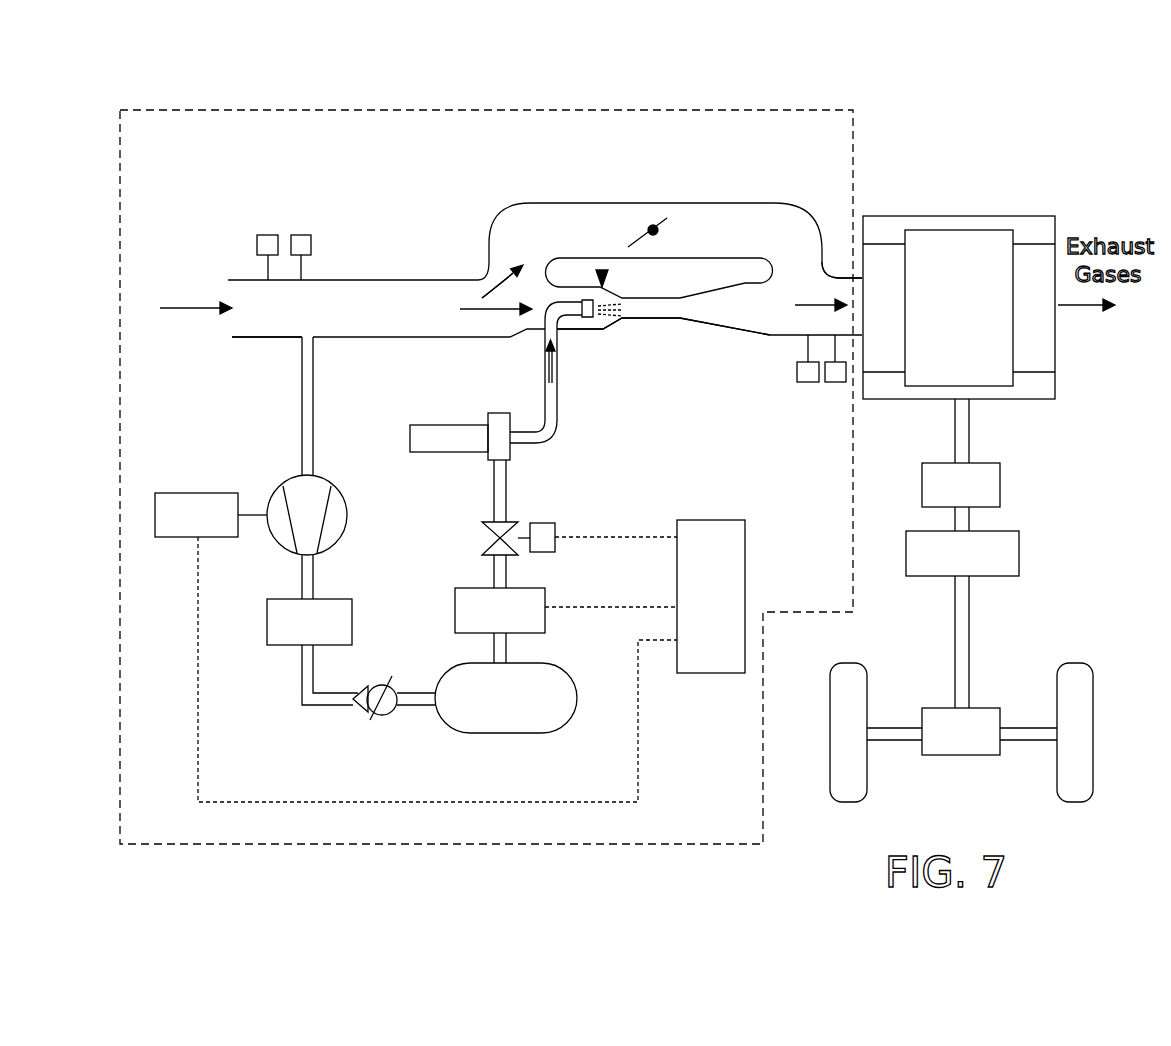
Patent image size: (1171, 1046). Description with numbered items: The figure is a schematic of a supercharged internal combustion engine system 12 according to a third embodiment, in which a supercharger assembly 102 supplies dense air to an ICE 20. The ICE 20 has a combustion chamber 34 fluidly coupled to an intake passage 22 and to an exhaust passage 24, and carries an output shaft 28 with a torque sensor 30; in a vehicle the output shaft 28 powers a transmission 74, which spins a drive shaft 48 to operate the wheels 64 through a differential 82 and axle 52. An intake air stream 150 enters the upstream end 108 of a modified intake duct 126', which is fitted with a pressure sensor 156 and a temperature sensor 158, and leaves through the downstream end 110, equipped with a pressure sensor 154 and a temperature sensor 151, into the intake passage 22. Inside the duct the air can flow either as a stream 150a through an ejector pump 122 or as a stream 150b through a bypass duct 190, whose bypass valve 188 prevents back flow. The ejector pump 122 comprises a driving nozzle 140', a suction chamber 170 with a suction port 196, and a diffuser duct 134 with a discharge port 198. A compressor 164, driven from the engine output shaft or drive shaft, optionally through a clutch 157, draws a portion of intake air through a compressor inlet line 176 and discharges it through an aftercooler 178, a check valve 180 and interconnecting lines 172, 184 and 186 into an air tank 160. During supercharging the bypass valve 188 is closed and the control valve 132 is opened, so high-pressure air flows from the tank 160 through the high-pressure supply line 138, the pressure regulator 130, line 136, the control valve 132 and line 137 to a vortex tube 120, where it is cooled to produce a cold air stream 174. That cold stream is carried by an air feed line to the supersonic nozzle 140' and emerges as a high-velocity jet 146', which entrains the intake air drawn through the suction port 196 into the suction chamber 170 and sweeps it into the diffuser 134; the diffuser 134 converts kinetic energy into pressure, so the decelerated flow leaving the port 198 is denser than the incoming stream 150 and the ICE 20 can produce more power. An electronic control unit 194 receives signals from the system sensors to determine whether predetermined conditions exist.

The supercharged ICE system 12 is at (1064, 139).
The internal combustion engine 20 is at (939, 208).
The intake passage 22 is at (884, 308).
The exhaust passage 24 is at (1064, 308).
The output shaft 28 is at (968, 443).
The torque sensor 30 is at (961, 497).
The combustion chamber 34 is at (959, 308).
The drive shaft 48 is at (968, 635).
The axle 52 is at (893, 725).
The vehicle wheels 64 is at (867, 763).
The transmission 74 is at (962, 553).
The differential 82 is at (961, 731).
The supercharger assembly 102 is at (484, 104).
The upstream end 108 is at (250, 297).
The downstream end 110 is at (822, 290).
The vortex tube 120 is at (417, 453).
The ejector pump 122 is at (602, 270).
The intake duct 126' is at (309, 267).
The pressure regulator 130 is at (566, 610).
The control valve 132 is at (497, 538).
The diffuser duct 134 is at (677, 322).
The interconnecting line 136 is at (507, 567).
The interconnecting line 137 is at (493, 500).
The high-pressure air supply line 138 is at (507, 647).
The driving nozzle 140' is at (545, 223).
The high-velocity jet 146' is at (638, 333).
The intake air stream 150 is at (190, 308).
The intake air stream through ejector 150a is at (470, 330).
The intake air stream through bypass duct 150b is at (483, 278).
The temperature sensor 151 is at (840, 383).
The pressure sensor 154 is at (810, 385).
The pressure sensor 156 is at (268, 235).
The clutch 157 is at (416, 647).
The temperature sensor 158 is at (301, 235).
The air tank 160 is at (506, 698).
The compressor 164 is at (278, 487).
The suction chamber 170 is at (570, 280).
The interconnecting line 172 is at (313, 567).
The cold air stream 174 is at (545, 370).
The compressor inlet line 176 is at (300, 435).
The aftercooler 178 is at (309, 622).
The check valve 180 is at (368, 707).
The interconnecting line 184 is at (300, 680).
The interconnecting line 186 is at (422, 693).
The bypass valve 188 is at (653, 225).
The bypass duct 190 is at (718, 202).
The electronic control unit 194 is at (711, 596).
The suction port 196 is at (500, 235).
The discharge port 198 is at (765, 305).